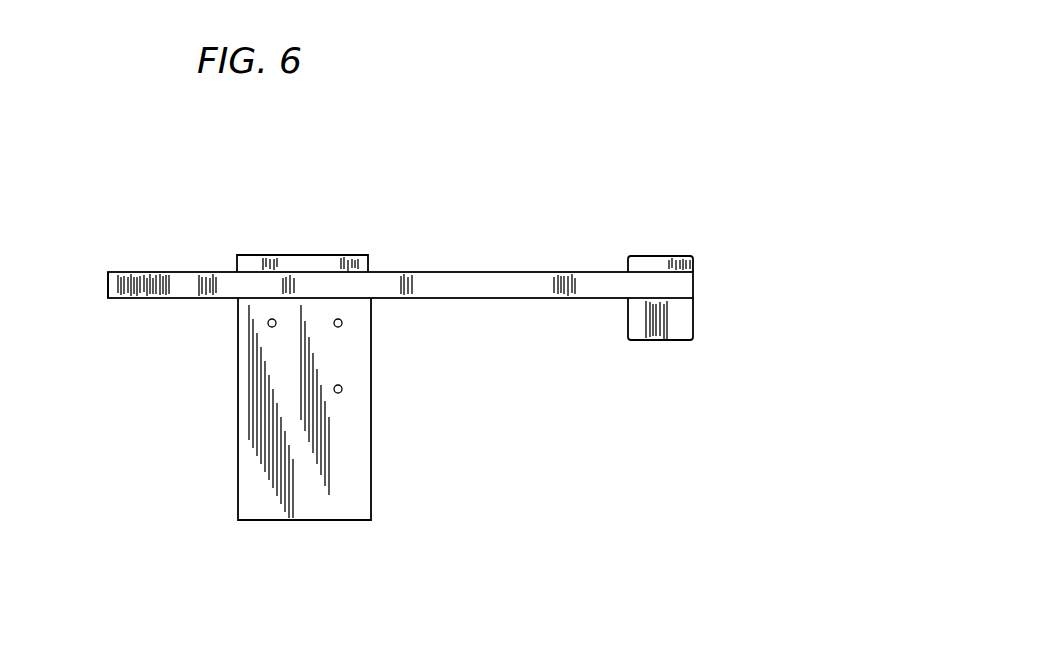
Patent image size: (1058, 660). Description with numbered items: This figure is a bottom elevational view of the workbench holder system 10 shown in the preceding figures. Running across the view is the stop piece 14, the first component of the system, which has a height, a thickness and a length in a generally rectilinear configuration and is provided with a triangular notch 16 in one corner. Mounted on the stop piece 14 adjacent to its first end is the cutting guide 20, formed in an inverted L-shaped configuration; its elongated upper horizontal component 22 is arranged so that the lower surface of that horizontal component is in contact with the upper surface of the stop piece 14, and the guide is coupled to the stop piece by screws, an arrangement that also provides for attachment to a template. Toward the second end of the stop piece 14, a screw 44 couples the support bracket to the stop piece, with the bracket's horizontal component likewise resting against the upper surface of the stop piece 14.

The workbench holder system 10 is at (812, 175).
The stop piece 14 is at (477, 299).
The triangular notch 16 is at (128, 297).
The cutting guide 20 is at (370, 257).
The upper horizontal component 22 is at (372, 485).
The screw 44 is at (647, 255).